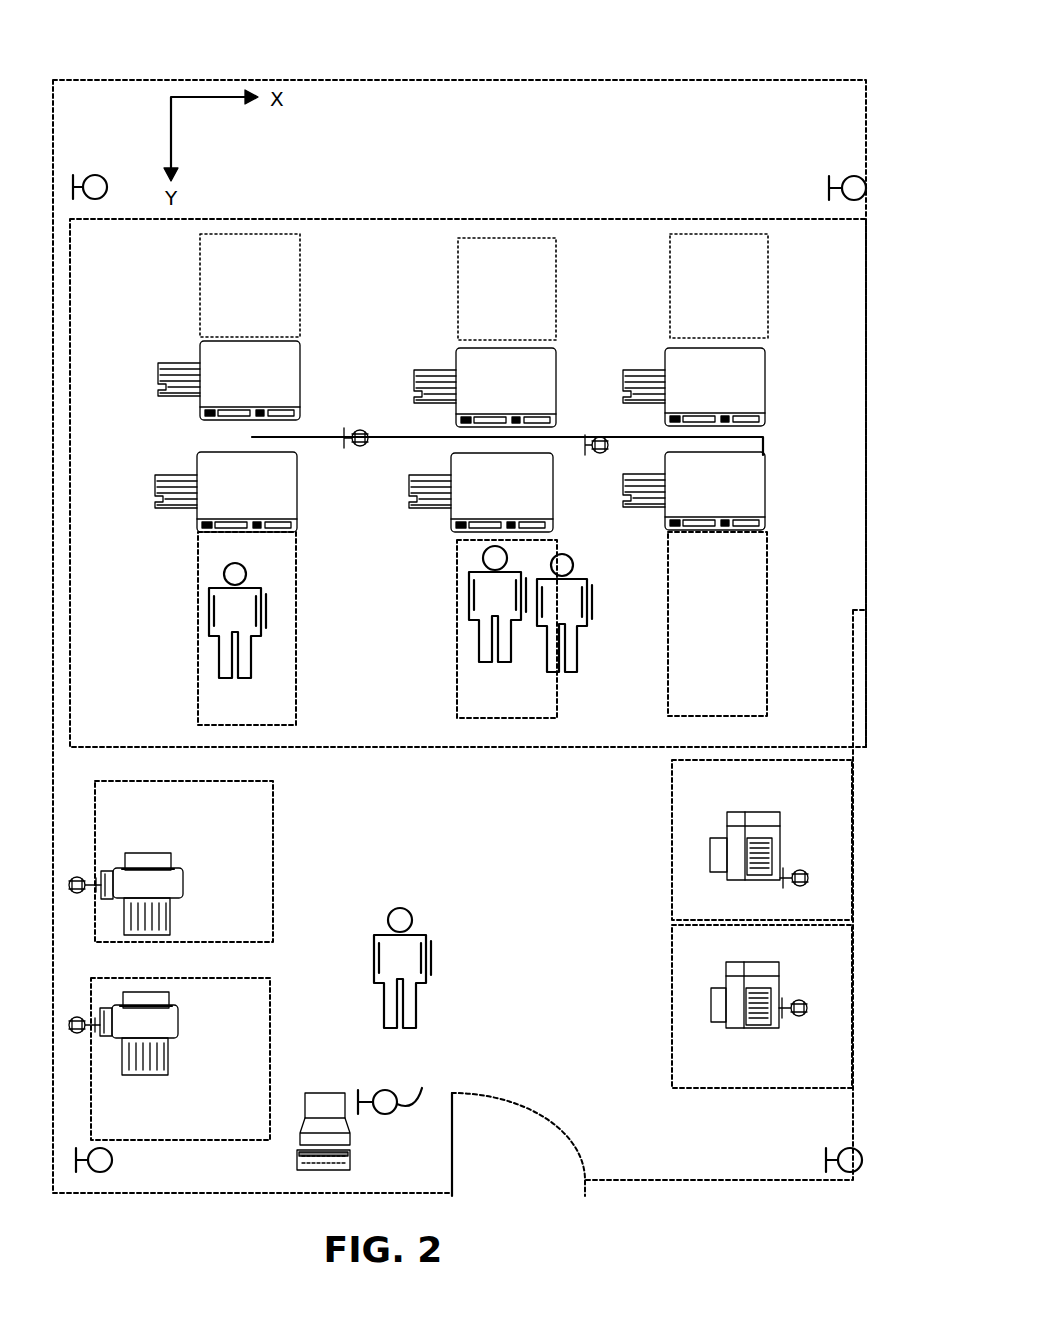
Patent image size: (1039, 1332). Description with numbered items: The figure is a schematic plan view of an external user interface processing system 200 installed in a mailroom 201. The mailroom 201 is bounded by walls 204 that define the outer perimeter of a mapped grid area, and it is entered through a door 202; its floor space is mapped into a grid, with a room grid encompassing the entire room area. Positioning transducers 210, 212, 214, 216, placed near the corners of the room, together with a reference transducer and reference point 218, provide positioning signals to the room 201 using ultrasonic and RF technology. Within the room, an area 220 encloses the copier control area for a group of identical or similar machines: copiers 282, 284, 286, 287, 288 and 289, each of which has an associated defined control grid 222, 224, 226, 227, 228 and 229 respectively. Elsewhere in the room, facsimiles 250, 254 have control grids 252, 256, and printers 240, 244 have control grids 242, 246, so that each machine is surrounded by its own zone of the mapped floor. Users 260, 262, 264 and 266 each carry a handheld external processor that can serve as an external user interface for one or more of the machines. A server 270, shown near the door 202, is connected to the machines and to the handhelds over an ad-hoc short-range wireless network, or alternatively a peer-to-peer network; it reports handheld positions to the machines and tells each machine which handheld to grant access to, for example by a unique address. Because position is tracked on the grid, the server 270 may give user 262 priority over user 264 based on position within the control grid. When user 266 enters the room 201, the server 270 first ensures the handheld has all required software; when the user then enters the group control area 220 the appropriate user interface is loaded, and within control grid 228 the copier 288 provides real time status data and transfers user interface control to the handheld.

The external user interface processing system 200 is at (612, 66).
The mailroom 201 is at (538, 896).
The door 202 is at (452, 1130).
The walls 204 is at (730, 1182).
The positioning transducer 210 is at (851, 176).
The positioning transducer 212 is at (107, 186).
The positioning transducer 214 is at (846, 1150).
The positioning transducer 216 is at (113, 1160).
The reference transducer and reference point 218 is at (399, 1085).
The copier control area 220 is at (428, 217).
The control grid 222 is at (298, 299).
The control grid 224 is at (556, 299).
The control grid 226 is at (768, 293).
The control grid 227 is at (297, 663).
The control grid 228 is at (557, 697).
The control grid 229 is at (768, 643).
The printer 240 is at (757, 1027).
The control grid 242 is at (745, 1088).
The printer 244 is at (748, 866).
The control grid 246 is at (672, 881).
The facsimile 250 is at (168, 890).
The control grid 252 is at (273, 909).
The facsimile 254 is at (168, 1023).
The control grid 256 is at (270, 1087).
The user 260 is at (235, 604).
The user 262 is at (492, 590).
The user 264 is at (565, 605).
The user 266 is at (404, 960).
The server 270 is at (350, 1158).
The copier 282 is at (295, 378).
The copier 284 is at (548, 388).
The copier 286 is at (757, 385).
The copier 287 is at (283, 493).
The copier 288 is at (533, 477).
The copier 289 is at (763, 498).